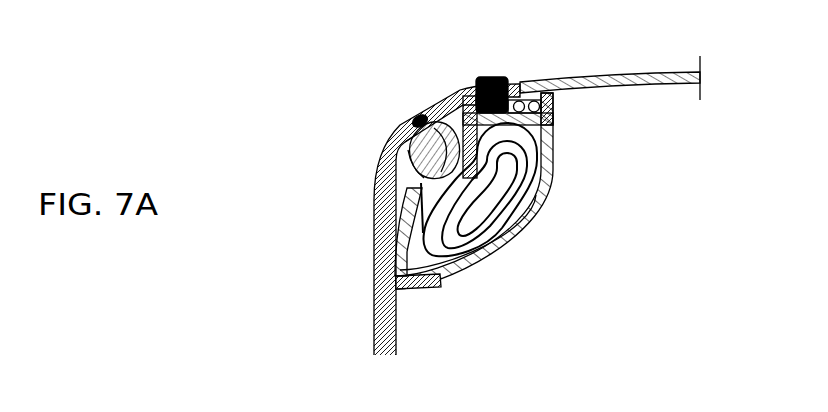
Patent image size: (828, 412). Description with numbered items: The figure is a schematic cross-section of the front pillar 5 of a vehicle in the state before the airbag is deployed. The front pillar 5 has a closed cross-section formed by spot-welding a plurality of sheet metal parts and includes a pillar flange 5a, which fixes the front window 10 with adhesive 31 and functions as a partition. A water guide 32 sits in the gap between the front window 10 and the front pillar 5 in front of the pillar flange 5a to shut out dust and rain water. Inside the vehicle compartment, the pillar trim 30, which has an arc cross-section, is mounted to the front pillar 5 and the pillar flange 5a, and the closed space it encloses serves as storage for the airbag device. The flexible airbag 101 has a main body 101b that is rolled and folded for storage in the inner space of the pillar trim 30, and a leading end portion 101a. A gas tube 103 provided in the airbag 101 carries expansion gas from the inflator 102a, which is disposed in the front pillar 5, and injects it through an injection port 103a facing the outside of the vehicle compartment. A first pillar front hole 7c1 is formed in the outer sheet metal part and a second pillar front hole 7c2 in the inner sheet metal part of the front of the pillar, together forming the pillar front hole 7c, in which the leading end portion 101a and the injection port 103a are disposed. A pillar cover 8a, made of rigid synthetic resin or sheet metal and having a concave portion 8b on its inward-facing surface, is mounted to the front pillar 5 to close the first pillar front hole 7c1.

The front pillar 5 is at (375, 356).
The pillar flange 5a is at (554, 131).
The pillar front hole 7c is at (343, 208).
The first pillar front hole 7c1 is at (410, 140).
The second pillar front hole 7c2 is at (420, 193).
The pillar cover 8a is at (416, 116).
The concave portion 8b is at (411, 121).
The front window 10 is at (668, 84).
The pillar trim 30 is at (432, 290).
The adhesive 31 is at (556, 101).
The water guide 32 is at (493, 77).
The airbag 101 is at (513, 191).
The leading end portion 101a is at (484, 242).
The main body 101b is at (496, 256).
The inflator 102a is at (532, 170).
The gas tube 103 is at (422, 106).
The injection port 103a is at (422, 114).